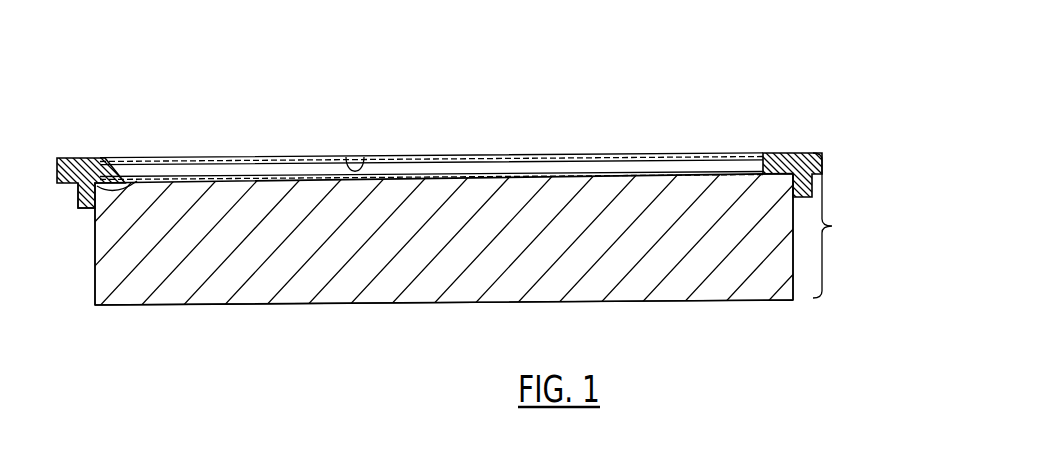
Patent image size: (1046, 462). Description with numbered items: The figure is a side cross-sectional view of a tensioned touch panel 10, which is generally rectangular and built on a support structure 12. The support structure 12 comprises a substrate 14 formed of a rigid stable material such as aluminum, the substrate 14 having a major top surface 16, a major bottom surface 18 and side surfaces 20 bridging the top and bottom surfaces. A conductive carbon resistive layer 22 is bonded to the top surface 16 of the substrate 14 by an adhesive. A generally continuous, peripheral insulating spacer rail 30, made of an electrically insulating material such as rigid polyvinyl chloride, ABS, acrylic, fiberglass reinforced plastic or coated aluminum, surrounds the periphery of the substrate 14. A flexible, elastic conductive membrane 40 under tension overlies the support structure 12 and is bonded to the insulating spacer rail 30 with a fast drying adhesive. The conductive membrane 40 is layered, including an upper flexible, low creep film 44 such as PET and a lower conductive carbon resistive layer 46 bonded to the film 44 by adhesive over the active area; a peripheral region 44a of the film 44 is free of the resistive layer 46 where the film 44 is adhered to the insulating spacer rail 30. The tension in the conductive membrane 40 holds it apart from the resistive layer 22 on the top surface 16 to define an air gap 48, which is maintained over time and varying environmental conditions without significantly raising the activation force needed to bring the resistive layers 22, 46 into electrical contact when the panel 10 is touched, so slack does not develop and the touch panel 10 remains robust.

The tensioned touch panel 10 is at (814, 72).
The support structure 12 is at (841, 225).
The substrate 14 is at (673, 282).
The major top surface 16 is at (76, 198).
The major bottom surface 18 is at (234, 306).
The side surfaces 20 is at (94, 250).
The conductive carbon resistive layer 22 is at (418, 178).
The insulating spacer rail 30 is at (110, 158).
The conductive membrane 40 is at (431, 132).
The film 44 is at (301, 157).
The peripheral region of the film 44a is at (130, 161).
The conductive carbon resistive layer 46 is at (360, 157).
The air gap 48 is at (228, 164).